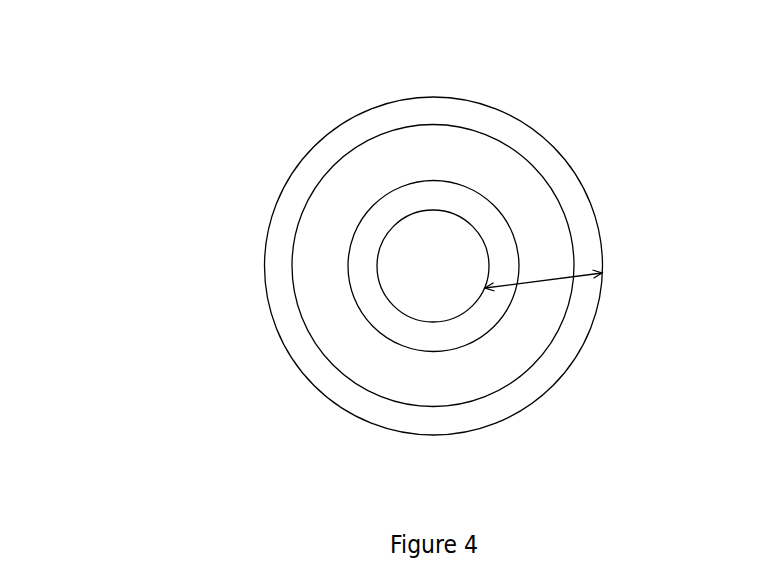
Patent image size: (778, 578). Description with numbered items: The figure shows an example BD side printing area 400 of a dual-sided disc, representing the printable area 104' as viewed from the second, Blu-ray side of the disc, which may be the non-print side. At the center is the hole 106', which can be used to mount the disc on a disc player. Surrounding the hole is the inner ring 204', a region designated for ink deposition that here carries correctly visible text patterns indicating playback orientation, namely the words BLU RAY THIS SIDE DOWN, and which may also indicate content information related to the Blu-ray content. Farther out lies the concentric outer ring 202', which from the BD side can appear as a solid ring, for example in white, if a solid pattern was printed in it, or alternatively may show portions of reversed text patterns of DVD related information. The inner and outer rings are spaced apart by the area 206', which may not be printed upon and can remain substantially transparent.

The BD side printing area 400 is at (163, 58).
The outer ring 202' is at (486, 266).
The area between rings 206' is at (433, 286).
The hole 106' is at (433, 266).
The inner ring 204' is at (359, 278).
The printable area 104' is at (573, 318).